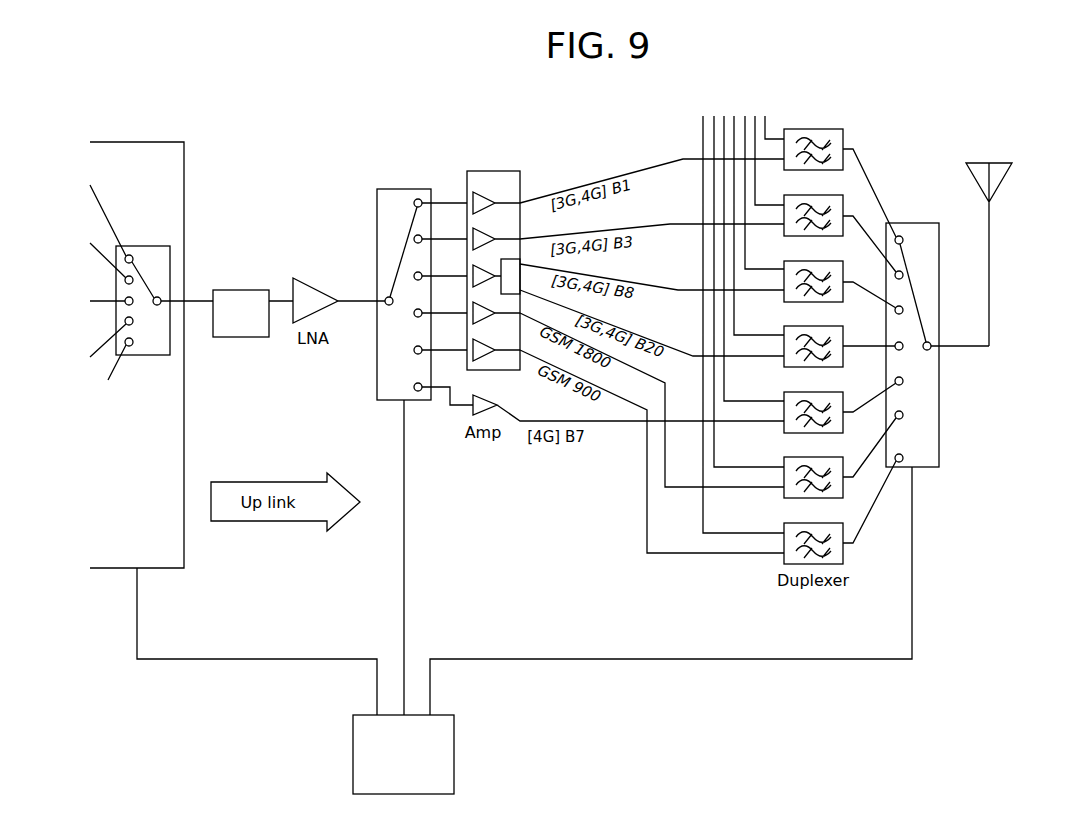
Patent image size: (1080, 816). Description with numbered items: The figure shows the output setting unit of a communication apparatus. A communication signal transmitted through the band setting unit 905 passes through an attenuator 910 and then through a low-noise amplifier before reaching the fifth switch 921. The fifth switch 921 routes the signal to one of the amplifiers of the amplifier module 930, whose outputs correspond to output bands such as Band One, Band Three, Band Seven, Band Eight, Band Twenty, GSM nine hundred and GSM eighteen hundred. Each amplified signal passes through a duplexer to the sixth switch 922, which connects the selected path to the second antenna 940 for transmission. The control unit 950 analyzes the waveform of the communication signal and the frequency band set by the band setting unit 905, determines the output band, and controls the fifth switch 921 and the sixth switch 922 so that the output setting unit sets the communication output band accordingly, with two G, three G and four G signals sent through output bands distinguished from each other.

The band setting unit 905 is at (138, 142).
The attenuator 910 is at (241, 290).
The fifth switch 921 is at (405, 250).
The sixth switch 922 is at (907, 277).
The amplifier module 930 is at (490, 171).
The second antenna 940 is at (1003, 182).
The control unit 950 is at (454, 744).